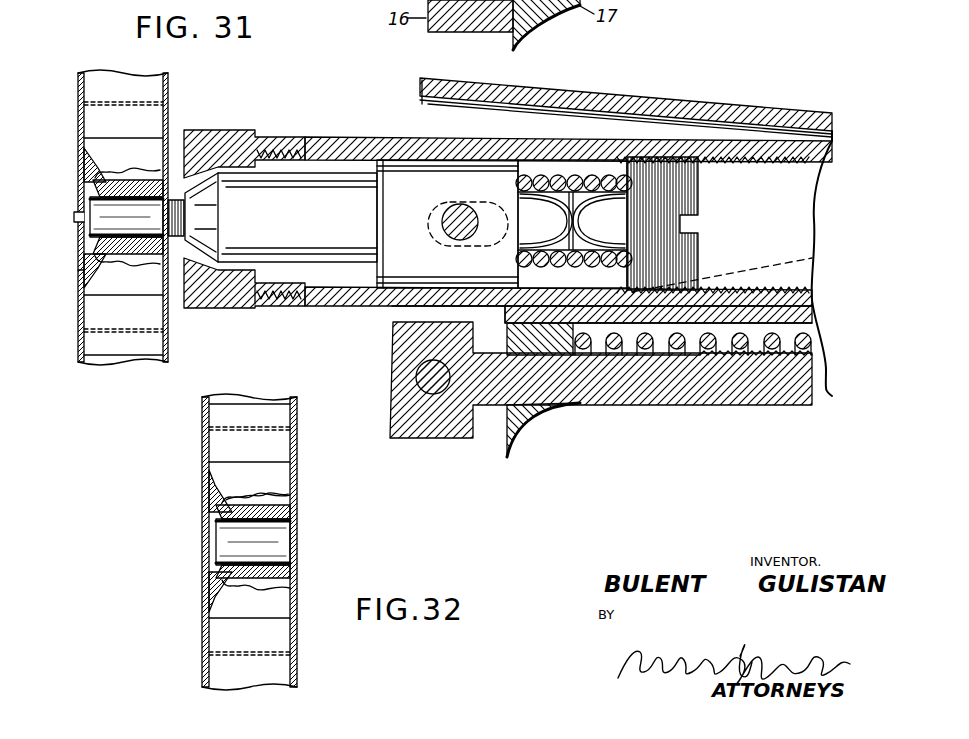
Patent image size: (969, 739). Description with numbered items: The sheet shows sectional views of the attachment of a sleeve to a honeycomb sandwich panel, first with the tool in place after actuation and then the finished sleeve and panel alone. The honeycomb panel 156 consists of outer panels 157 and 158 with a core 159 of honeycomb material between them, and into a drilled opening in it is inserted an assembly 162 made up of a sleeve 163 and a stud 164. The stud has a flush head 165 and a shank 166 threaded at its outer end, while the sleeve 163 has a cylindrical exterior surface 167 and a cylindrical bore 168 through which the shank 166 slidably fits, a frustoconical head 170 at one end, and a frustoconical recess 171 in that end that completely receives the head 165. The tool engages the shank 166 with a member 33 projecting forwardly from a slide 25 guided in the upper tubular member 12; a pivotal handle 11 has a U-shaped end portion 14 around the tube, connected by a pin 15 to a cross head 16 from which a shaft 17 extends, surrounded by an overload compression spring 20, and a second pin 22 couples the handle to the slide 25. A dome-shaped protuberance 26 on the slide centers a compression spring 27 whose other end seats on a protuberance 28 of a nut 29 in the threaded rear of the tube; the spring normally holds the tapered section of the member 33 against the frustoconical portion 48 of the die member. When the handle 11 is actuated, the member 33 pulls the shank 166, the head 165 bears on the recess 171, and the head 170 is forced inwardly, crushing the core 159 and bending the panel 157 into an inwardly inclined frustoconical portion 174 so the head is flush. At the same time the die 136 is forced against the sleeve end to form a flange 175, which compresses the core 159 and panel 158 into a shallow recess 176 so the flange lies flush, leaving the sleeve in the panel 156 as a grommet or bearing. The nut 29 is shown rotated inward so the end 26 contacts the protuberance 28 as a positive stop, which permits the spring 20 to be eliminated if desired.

In FIG. 31, the pivotal handle 11 is at (782, 116).
In FIG. 31, the upper tubular member 12 is at (328, 137).
In FIG. 31, the U-shaped end portion 14 is at (418, 115).
In FIG. 31, the pin 15 is at (415, 380).
In FIG. 31, the cross head 16 is at (390, 426).
In FIG. 31, the shaft 17 is at (493, 398).
In FIG. 31, the compression spring 20 is at (812, 345).
In FIG. 31, the second pin 22 is at (463, 206).
In FIG. 31, the slide 25 is at (400, 166).
In FIG. 31, the dome-shaped protuberance 26 is at (538, 255).
In FIG. 31, the compression spring 27 is at (534, 176).
In FIG. 31, the protuberance 28 is at (588, 255).
In FIG. 31, the nut 29 is at (697, 199).
In FIG. 31, the member 33 is at (274, 285).
In FIG. 31, the frustoconical portion 48 is at (216, 200).
In FIG. 31, the die 136 is at (235, 130).
In FIG. 31, the honeycomb panel 156 is at (173, 101).
In FIG. 32, the honeycomb panel 156 is at (298, 452).
In FIG. 31, the outer panel 157 is at (78, 80).
In FIG. 32, the outer panel 157 is at (202, 444).
In FIG. 31, the outer panel 158 is at (168, 80).
In FIG. 32, the outer panel 158 is at (298, 420).
In FIG. 31, the core 159 is at (124, 352).
In FIG. 32, the core 159 is at (266, 400).
In FIG. 31, the assembly 162 is at (78, 264).
In FIG. 31, the sleeve 163 is at (78, 158).
In FIG. 32, the sleeve 163 is at (212, 582).
In FIG. 31, the stud 164 is at (78, 238).
In FIG. 31, the flush head 165 is at (80, 205).
In FIG. 31, the shank 166 is at (180, 224).
In FIG. 31, the cylindrical exterior surface 167 is at (111, 262).
In FIG. 32, the cylindrical exterior surface 167 is at (240, 505).
In FIG. 31, the cylindrical bore 168 is at (108, 200).
In FIG. 32, the cylindrical bore 168 is at (298, 536).
In FIG. 31, the head 170 is at (84, 272).
In FIG. 31, the frustoconical recess 171 is at (80, 185).
In FIG. 32, the frustoconical recess 171 is at (212, 530).
In FIG. 31, the inwardly inclined frustoconical portion 174 is at (92, 170).
In FIG. 32, the inwardly inclined frustoconical portion 174 is at (222, 500).
In FIG. 32, the flange 175 is at (298, 504).
In FIG. 32, the recess 176 is at (282, 586).